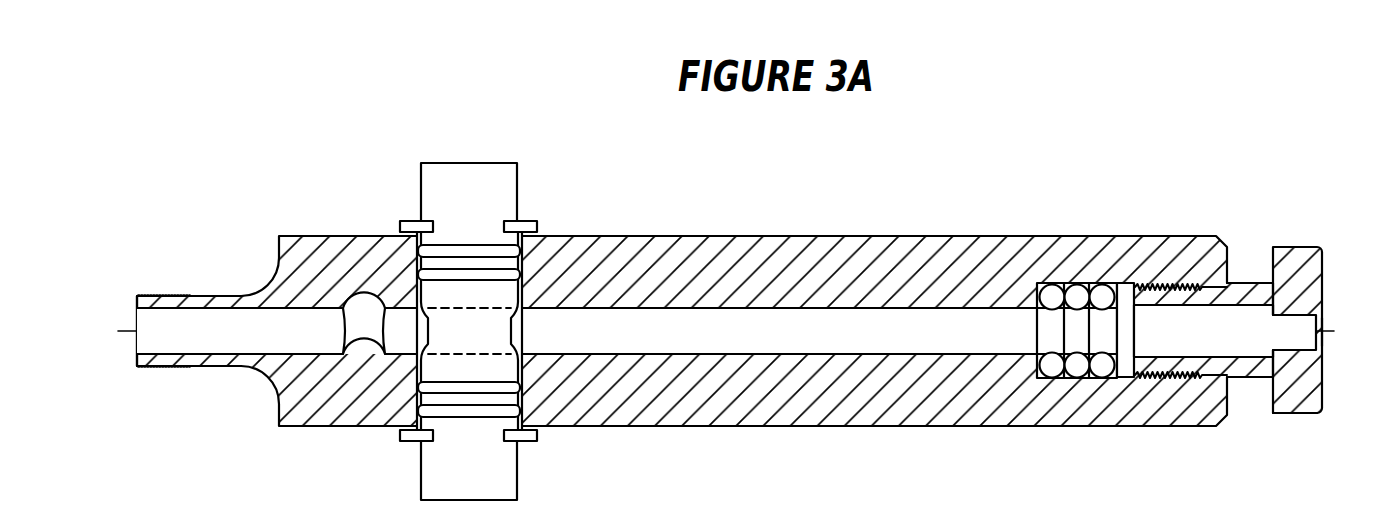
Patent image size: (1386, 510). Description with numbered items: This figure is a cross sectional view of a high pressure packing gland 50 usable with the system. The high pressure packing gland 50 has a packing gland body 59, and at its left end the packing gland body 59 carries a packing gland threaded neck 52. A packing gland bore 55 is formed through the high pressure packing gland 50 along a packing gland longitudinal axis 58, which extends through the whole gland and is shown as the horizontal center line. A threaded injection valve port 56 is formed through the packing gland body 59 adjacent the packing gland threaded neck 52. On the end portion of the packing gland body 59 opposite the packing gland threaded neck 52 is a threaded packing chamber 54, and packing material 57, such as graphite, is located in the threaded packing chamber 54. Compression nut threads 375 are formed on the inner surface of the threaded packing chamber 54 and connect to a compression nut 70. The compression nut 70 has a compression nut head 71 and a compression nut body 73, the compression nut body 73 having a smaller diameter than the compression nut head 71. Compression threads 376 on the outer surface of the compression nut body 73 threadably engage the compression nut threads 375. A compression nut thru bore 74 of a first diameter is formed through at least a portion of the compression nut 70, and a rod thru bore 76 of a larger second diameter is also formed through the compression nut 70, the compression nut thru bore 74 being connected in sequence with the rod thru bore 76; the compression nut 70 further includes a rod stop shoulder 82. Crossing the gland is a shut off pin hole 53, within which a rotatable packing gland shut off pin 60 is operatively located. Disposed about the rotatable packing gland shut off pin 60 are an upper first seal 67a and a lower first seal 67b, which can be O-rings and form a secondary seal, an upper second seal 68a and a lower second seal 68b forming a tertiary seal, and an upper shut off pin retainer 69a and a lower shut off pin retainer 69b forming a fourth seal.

The high pressure packing gland 50 is at (107, 111).
The packing gland threaded neck 52 is at (167, 296).
The shut off pin hole 53 is at (523, 370).
The threaded packing chamber 54 is at (1125, 280).
The packing gland bore 55 is at (134, 317).
The threaded injection valve port 56 is at (371, 368).
The packing material 57 is at (1120, 379).
The packing gland longitudinal axis 58 is at (1328, 336).
The packing gland body 59 is at (337, 236).
The rotatable packing gland shut off pin 60 is at (477, 163).
The upper first seal 67a is at (522, 274).
The lower first seal 67b is at (522, 388).
The upper second seal 68a is at (522, 249).
The lower second seal 68b is at (522, 412).
The upper shut off pin retainer 69a is at (400, 226).
The lower shut off pin retainer 69b is at (400, 437).
The compression nut 70 is at (1337, 423).
The compression nut head 71 is at (1297, 247).
The compression nut body 73 is at (1240, 282).
The compression nut thru bore 74 is at (1213, 299).
The rod thru bore 76 is at (1326, 322).
The rod stop shoulder 82 is at (1272, 353).
The compression nut threads 375 is at (1172, 285).
The compression threads 376 is at (1190, 377).